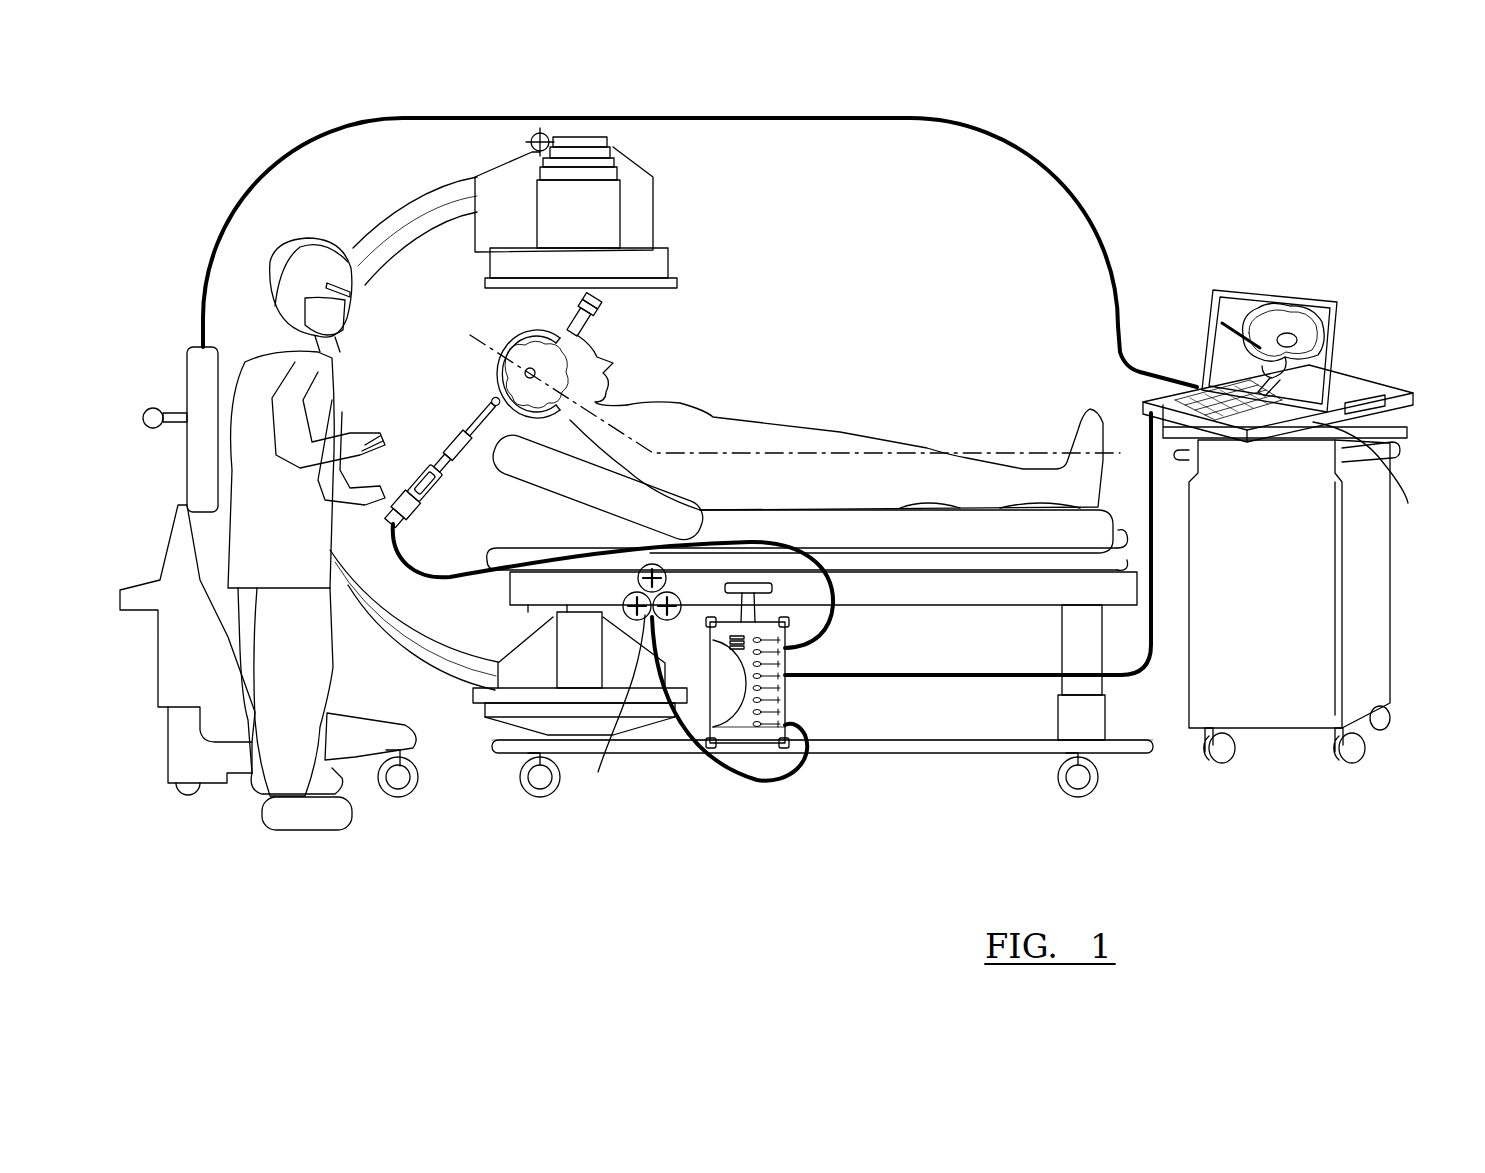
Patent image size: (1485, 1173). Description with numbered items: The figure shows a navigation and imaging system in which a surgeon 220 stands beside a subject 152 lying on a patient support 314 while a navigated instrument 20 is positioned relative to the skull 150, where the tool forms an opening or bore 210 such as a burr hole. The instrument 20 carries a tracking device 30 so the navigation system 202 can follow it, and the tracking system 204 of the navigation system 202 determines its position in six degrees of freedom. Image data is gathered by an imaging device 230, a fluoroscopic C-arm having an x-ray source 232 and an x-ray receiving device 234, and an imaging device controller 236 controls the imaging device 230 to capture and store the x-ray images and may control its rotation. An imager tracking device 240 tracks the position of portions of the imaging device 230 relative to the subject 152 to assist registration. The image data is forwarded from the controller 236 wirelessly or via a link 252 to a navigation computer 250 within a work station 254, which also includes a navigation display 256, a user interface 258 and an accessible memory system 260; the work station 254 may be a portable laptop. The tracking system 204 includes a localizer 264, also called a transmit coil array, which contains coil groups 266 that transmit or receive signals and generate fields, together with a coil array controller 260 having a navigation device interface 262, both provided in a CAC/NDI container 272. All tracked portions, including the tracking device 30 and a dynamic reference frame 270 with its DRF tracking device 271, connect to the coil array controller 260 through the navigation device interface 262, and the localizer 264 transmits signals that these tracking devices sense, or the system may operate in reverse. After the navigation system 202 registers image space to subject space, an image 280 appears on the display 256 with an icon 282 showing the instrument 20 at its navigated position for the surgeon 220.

The instrument 20 is at (430, 447).
The tracking device 30 is at (420, 510).
The skull 150 is at (564, 351).
The subject 152 is at (778, 424).
The navigation system 202 is at (718, 384).
The tracking system 204 is at (782, 822).
The bore 210 is at (524, 374).
The surgeon 220 is at (270, 335).
The imaging device 230 is at (360, 232).
The x-ray source 232 is at (565, 655).
The x-ray receiving device 234 is at (570, 183).
The imaging device controller 236 is at (190, 362).
The imager tracking device 240 is at (531, 138).
The navigation computer 250 is at (1378, 480).
The link 252 is at (1028, 150).
The work station 254 is at (1273, 313).
The navigation display 256 is at (1222, 278).
The user interface 258 is at (1280, 410).
The coil array controller 260 is at (740, 735).
The navigation device interface 262 is at (808, 758).
The localizer 264 is at (634, 596).
The coil groups 266 is at (607, 717).
The dynamic reference frame 270 is at (597, 330).
The DRF tracking device 271 is at (590, 307).
The CAC/NDI container 272 is at (724, 757).
The image 280 is at (1280, 335).
The icon 282 is at (1225, 325).
The patient support 314 is at (900, 540).